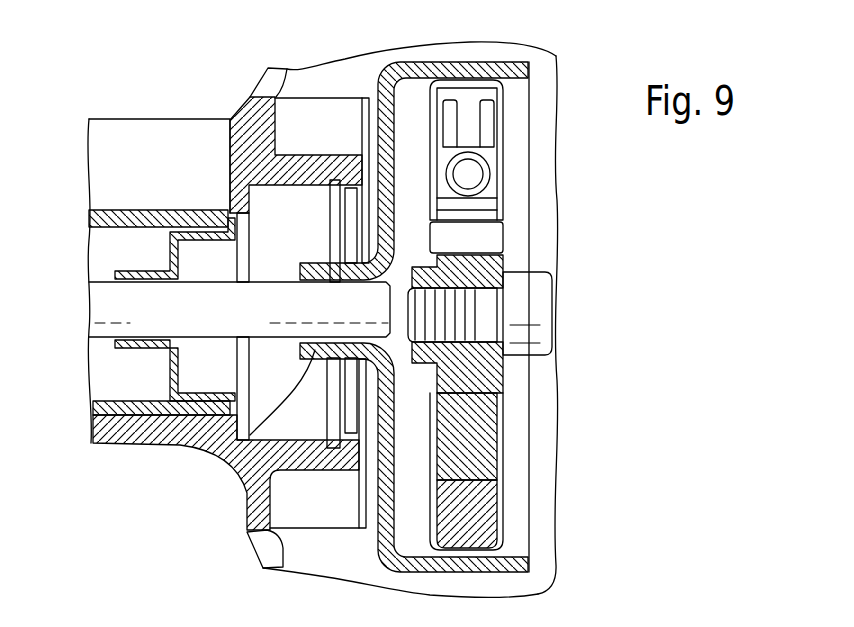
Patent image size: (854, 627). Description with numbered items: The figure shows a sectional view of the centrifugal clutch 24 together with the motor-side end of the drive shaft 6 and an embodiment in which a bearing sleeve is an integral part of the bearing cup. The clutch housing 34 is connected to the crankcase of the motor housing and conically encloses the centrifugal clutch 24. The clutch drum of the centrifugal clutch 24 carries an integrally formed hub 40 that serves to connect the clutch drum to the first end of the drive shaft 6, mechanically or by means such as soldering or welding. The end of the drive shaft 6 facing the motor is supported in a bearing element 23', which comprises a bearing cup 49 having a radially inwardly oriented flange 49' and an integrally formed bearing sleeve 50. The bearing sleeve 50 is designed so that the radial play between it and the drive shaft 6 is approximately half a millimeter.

The clutch housing 34 is at (253, 141).
The bearing sleeve 50 is at (142, 272).
The drive shaft 6 is at (208, 290).
The bearing element 23' is at (125, 309).
The radially inwardly oriented flange 49' is at (161, 421).
The bearing cup 49 is at (161, 451).
The hub 40 is at (228, 466).
The centrifugal clutch 24 is at (557, 477).